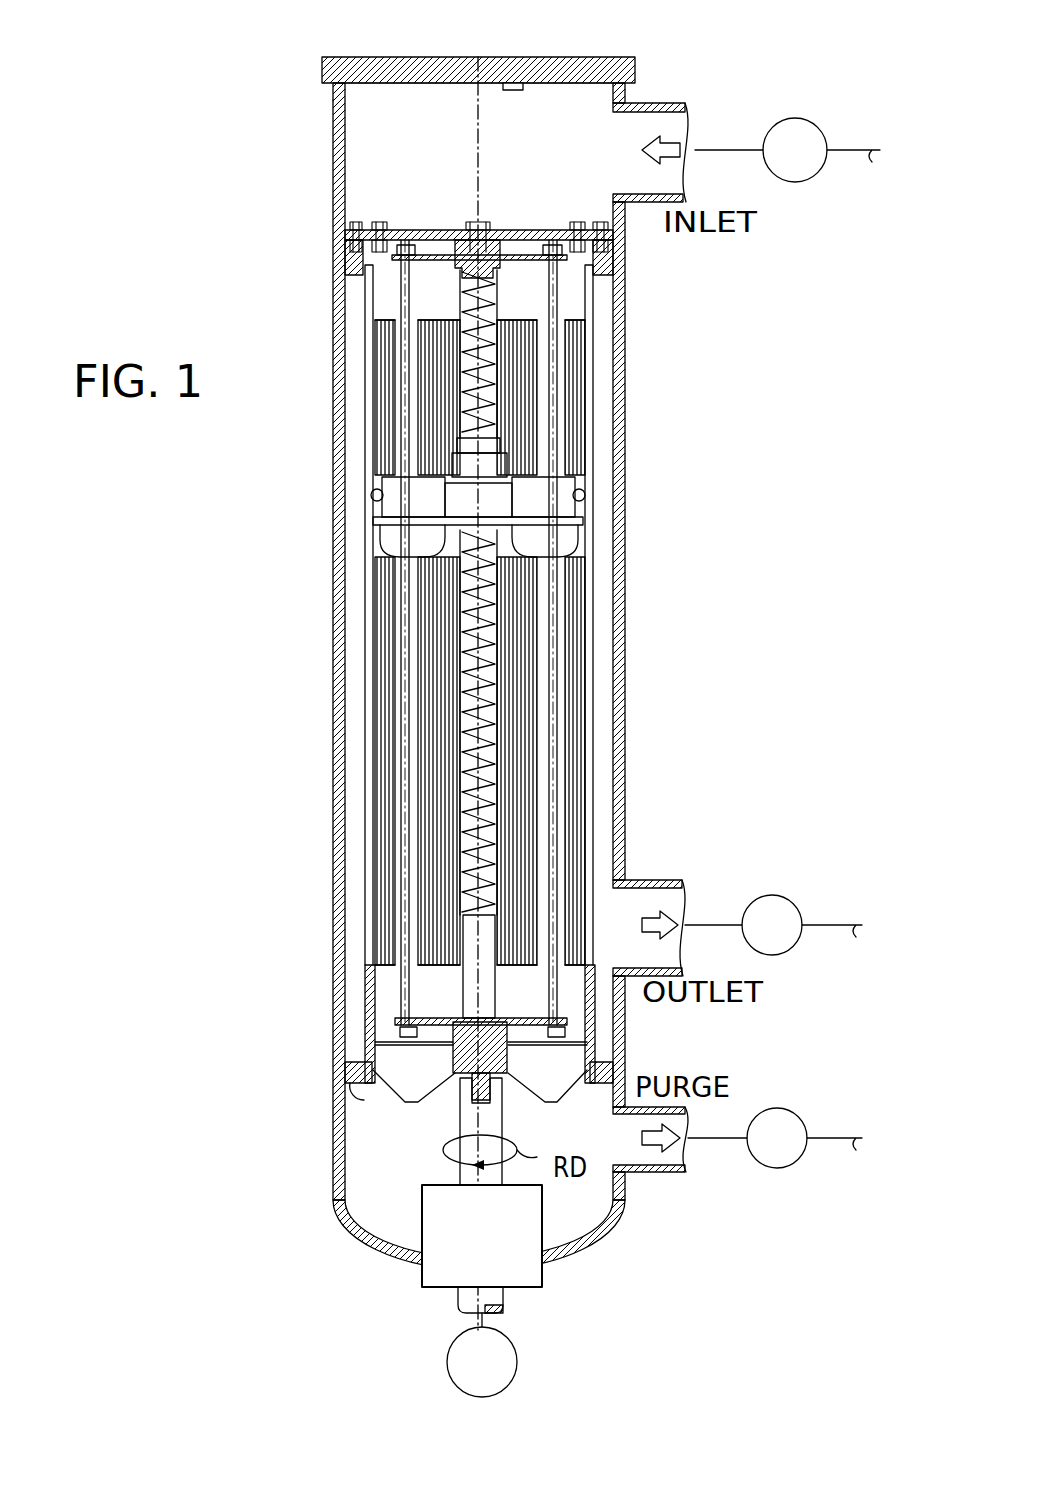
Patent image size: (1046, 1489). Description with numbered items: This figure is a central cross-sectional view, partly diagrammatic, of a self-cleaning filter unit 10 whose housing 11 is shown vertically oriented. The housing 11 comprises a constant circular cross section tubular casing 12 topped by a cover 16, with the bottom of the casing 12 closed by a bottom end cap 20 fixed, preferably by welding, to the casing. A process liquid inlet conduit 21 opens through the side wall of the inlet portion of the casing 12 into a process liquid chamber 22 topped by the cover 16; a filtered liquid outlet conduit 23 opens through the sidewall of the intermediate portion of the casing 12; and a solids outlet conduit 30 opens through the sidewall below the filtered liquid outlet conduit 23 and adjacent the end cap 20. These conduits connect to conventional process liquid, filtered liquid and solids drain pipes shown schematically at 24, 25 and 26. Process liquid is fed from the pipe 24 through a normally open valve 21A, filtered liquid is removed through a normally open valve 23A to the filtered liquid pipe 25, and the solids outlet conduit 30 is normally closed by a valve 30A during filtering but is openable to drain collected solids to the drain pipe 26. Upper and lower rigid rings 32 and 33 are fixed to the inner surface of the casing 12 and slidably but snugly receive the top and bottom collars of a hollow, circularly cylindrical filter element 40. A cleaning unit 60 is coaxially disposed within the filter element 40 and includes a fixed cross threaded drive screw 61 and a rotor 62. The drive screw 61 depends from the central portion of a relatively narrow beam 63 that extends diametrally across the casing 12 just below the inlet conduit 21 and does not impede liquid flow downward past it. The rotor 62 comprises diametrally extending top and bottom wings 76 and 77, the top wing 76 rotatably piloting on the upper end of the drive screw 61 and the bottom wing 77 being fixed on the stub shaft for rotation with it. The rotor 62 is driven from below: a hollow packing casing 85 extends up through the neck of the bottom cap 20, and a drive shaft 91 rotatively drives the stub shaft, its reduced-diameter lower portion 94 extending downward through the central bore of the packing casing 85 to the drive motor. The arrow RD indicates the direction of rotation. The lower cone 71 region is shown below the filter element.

The filter unit 10 is at (235, 707).
The housing 11 is at (309, 683).
The tubular casing 12 is at (332, 627).
The cover 16 is at (403, 55).
The bottom end cap 20 is at (350, 1232).
The process liquid inlet conduit 21 is at (664, 103).
The normally open valve 21A is at (796, 118).
The process liquid chamber 22 is at (523, 83).
The filtered liquid outlet conduit 23 is at (643, 882).
The normally open valve 23A is at (778, 895).
The process liquid pipe 24 is at (848, 150).
The filtered liquid pipe 25 is at (825, 925).
The drain pipe 26 is at (833, 1138).
The solids outlet conduit 30 is at (649, 1173).
The valve 30A is at (812, 1097).
The upper rigid ring 32 is at (343, 283).
The lower rigid ring 33 is at (340, 1107).
The filter element 40 is at (373, 773).
The cleaning unit 60 is at (374, 523).
The cross threaded drive screw 61 is at (497, 786).
The rotor 62 is at (573, 313).
The beam 63 is at (552, 240).
The conical bottom 71 is at (403, 1105).
The top wing 76 is at (513, 253).
The bottom wing 77 is at (538, 1065).
The packing casing 85 is at (421, 1280).
The drive shaft 91 is at (457, 1165).
The lower portion of the drive shaft 94 is at (460, 1305).